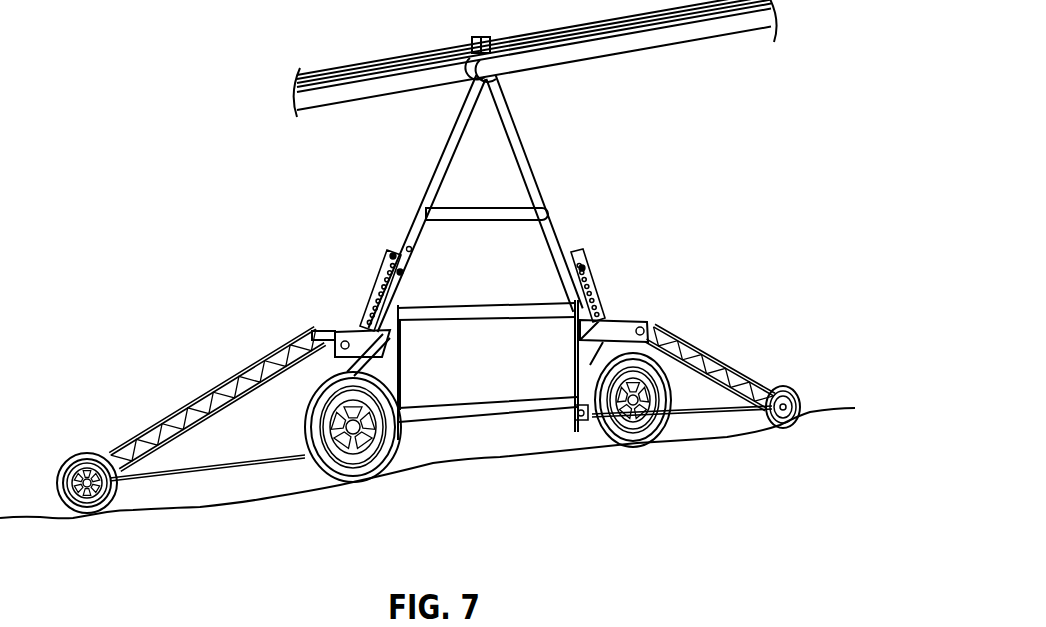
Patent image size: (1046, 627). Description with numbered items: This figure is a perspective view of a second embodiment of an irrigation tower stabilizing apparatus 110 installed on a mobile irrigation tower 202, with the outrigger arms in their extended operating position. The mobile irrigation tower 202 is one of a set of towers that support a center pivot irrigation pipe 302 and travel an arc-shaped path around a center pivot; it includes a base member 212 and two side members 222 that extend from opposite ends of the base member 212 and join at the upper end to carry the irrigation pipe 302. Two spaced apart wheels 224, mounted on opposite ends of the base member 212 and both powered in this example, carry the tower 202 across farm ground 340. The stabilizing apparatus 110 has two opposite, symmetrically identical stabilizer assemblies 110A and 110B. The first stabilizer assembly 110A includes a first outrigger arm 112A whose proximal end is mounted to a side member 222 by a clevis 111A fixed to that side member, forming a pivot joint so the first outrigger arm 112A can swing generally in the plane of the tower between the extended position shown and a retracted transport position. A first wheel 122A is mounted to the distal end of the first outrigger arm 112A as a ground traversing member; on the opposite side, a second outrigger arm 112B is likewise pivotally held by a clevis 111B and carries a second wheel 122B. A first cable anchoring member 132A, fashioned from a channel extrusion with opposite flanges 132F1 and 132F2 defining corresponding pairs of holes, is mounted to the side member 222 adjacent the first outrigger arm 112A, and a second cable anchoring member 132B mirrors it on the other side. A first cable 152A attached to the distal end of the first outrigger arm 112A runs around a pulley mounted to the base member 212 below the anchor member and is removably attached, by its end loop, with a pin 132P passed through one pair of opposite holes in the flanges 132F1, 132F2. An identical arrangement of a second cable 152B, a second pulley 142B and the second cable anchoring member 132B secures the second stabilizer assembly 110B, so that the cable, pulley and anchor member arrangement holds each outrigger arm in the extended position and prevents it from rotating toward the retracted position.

The center pivot irrigation pipe 302 is at (355, 115).
The mobile irrigation tower 202 is at (464, 203).
The side member 222 is at (455, 137).
The first cable anchoring member 132A is at (387, 266).
The second cable anchoring member 132B is at (574, 256).
The first flange 132F1 is at (412, 250).
The second flange 132F2 is at (392, 253).
The pin 132P is at (403, 274).
The base member 212 is at (448, 407).
The second pulley 142B is at (577, 422).
The wheel 224 is at (357, 484).
The irrigation tower stabilizing apparatus 110 is at (740, 340).
The first stabilizer assembly 110A is at (223, 425).
The second stabilizer assembly 110B is at (740, 384).
The clevis 111A is at (350, 331).
The clevis 111B is at (612, 330).
The first outrigger arm 112A is at (243, 373).
The second outrigger arm 112B is at (672, 330).
The first cable 152A is at (192, 462).
The second cable 152B is at (727, 411).
The first wheel 122A is at (98, 512).
The second wheel 122B is at (800, 395).
The farm ground 340 is at (190, 516).